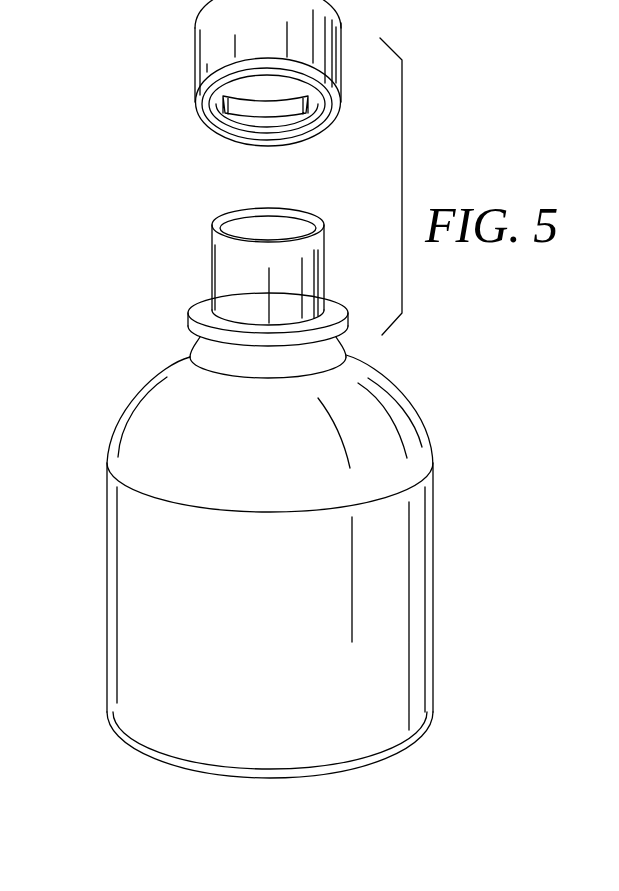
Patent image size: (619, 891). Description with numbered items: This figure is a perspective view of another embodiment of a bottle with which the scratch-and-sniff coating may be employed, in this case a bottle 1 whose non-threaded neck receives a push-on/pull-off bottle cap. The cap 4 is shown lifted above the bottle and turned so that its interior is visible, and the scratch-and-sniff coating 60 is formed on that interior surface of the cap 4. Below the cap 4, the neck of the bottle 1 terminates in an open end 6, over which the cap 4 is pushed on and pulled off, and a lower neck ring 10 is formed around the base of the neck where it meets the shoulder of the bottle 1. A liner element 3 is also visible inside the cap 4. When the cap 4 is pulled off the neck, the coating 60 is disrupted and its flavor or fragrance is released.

The bottle 1 is at (107, 498).
The liner 3 is at (220, 118).
The cap 4 is at (195, 53).
The open end 6 is at (283, 230).
The lower neck ring 10 is at (203, 315).
The scratch-and-sniff coating 60 is at (295, 107).